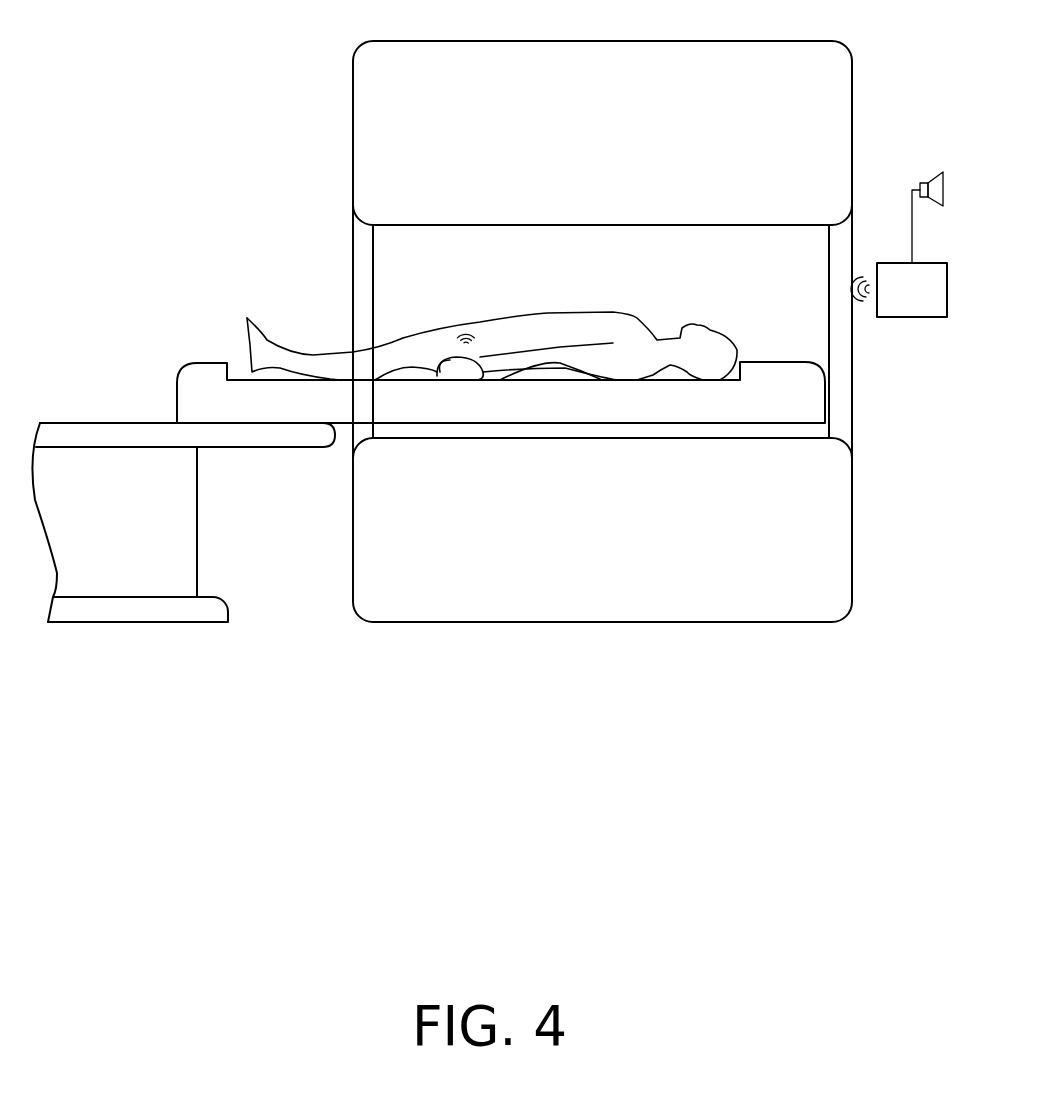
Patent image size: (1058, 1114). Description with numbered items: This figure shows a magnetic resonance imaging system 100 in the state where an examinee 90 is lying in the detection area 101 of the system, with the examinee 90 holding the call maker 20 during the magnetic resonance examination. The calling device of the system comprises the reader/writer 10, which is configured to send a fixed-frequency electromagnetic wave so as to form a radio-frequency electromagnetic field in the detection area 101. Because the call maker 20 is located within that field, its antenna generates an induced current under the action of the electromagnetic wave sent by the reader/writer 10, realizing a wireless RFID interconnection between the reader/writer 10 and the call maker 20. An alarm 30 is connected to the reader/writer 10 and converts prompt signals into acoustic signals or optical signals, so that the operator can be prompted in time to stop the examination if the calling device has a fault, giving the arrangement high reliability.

The magnetic resonance imaging system 100 is at (196, 108).
The detection area 101 is at (617, 272).
The examinee 90 is at (550, 333).
The call maker 20 is at (450, 367).
The alarm 30 is at (935, 178).
The reader/writer 10 is at (930, 303).